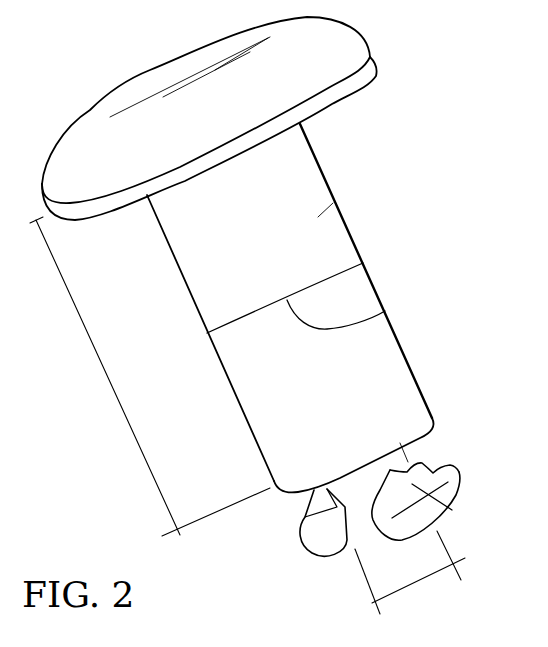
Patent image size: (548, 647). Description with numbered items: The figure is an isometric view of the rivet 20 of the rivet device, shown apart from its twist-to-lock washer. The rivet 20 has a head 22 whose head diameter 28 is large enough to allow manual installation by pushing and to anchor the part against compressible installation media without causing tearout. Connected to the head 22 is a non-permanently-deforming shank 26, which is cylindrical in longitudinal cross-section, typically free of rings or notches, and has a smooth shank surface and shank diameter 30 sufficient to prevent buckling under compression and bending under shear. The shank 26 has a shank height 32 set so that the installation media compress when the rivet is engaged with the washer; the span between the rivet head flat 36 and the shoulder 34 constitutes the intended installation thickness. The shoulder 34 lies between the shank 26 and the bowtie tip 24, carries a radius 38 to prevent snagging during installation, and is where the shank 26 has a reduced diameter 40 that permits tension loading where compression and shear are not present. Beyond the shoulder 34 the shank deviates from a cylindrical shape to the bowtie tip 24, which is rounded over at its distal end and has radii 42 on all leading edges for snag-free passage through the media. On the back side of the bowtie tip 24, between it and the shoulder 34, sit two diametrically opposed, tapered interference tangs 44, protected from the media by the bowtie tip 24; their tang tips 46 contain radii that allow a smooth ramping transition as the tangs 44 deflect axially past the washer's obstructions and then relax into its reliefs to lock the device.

The rivet 20 is at (454, 361).
The head 22 is at (143, 87).
The bowtie tip 24 is at (333, 558).
The shank 26 is at (334, 197).
The head diameter 28 is at (367, 63).
The shank diameter 30 is at (385, 311).
The shank height 32 is at (108, 378).
The shoulder 34 is at (440, 433).
The rivet head flat 36 is at (344, 98).
The radius 38 is at (283, 495).
The reduced diameter 40 is at (413, 587).
The radii 42 is at (460, 494).
The interference tangs 44 is at (450, 521).
The tang tips 46 is at (413, 452).